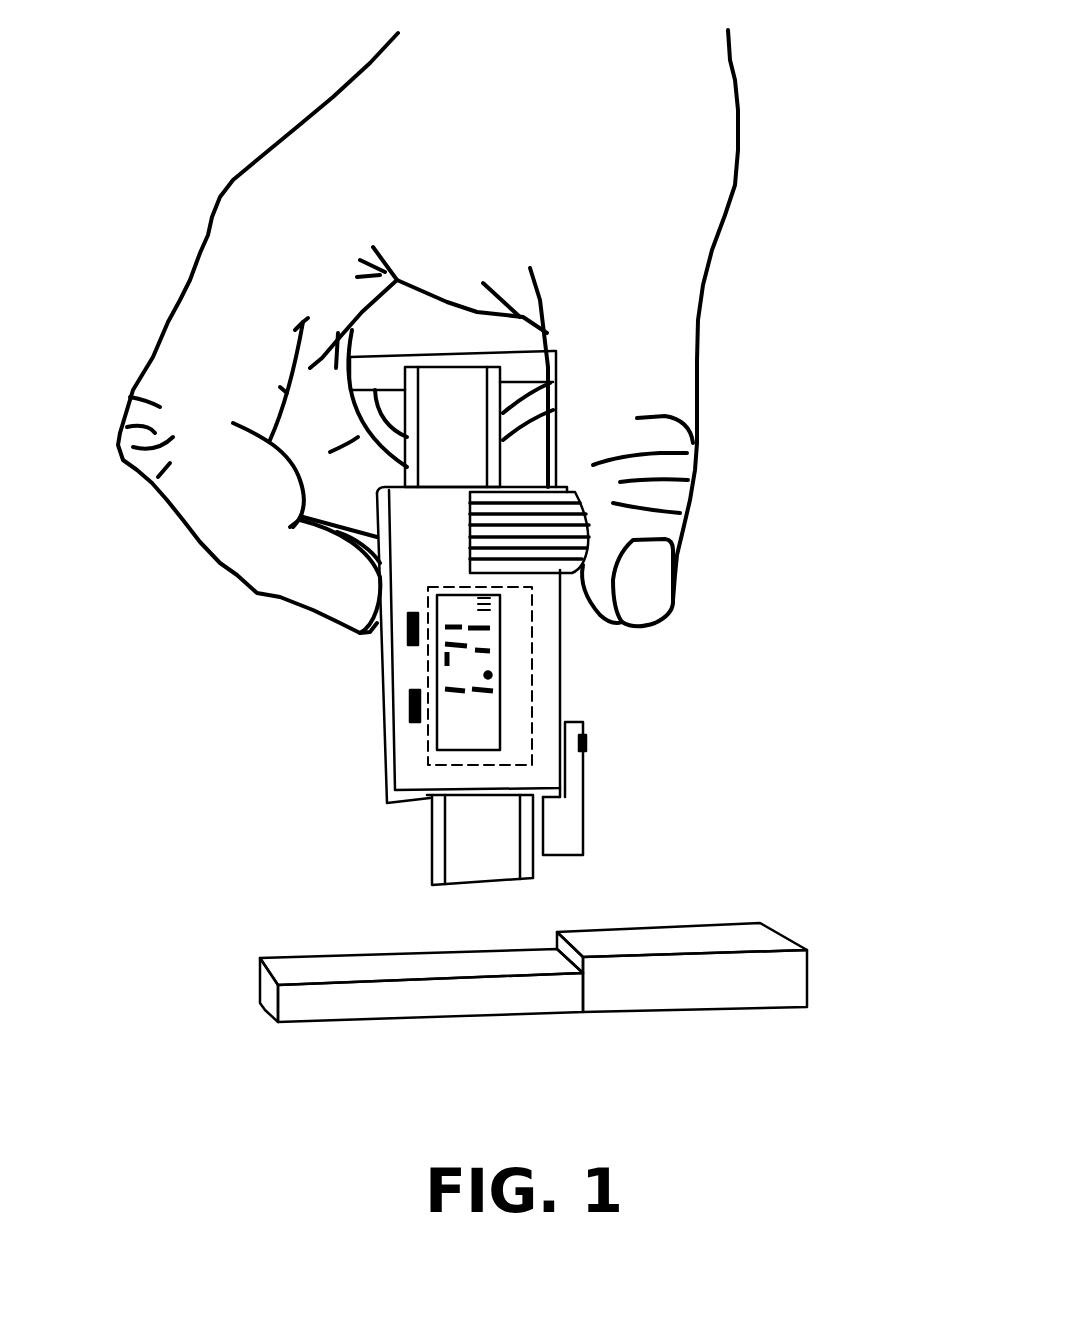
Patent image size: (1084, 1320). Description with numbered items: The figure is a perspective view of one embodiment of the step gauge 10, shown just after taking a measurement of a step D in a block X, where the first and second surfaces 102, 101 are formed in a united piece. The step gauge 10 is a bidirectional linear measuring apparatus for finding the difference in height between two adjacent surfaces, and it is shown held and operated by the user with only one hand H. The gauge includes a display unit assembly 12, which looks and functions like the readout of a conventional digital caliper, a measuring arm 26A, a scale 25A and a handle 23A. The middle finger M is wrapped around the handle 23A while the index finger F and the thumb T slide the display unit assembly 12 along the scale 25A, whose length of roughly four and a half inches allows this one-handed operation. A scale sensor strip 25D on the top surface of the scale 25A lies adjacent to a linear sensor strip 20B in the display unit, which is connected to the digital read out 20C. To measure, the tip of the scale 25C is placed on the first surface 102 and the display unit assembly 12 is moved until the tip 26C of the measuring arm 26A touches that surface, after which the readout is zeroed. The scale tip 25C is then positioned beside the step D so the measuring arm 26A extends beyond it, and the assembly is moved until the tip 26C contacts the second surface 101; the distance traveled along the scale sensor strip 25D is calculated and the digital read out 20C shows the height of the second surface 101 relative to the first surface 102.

The hand H is at (605, 162).
The thumb T is at (657, 527).
The middle finger M is at (310, 438).
The index finger F is at (297, 560).
The step gauge 10 is at (542, 605).
The display unit assembly 12 is at (380, 640).
The linear sensor strip 20B is at (513, 643).
The digital read out 20C is at (460, 735).
The handle 23A is at (480, 333).
The scale 25A is at (430, 840).
The tip of the scale 25C is at (530, 880).
The scale sensor strip 25D is at (475, 832).
The measuring arm 26A is at (570, 808).
The tip of the measuring arm 26C is at (637, 812).
The second surface 101 is at (760, 938).
The first surface 102 is at (313, 973).
The step D is at (567, 953).
The block X is at (717, 908).